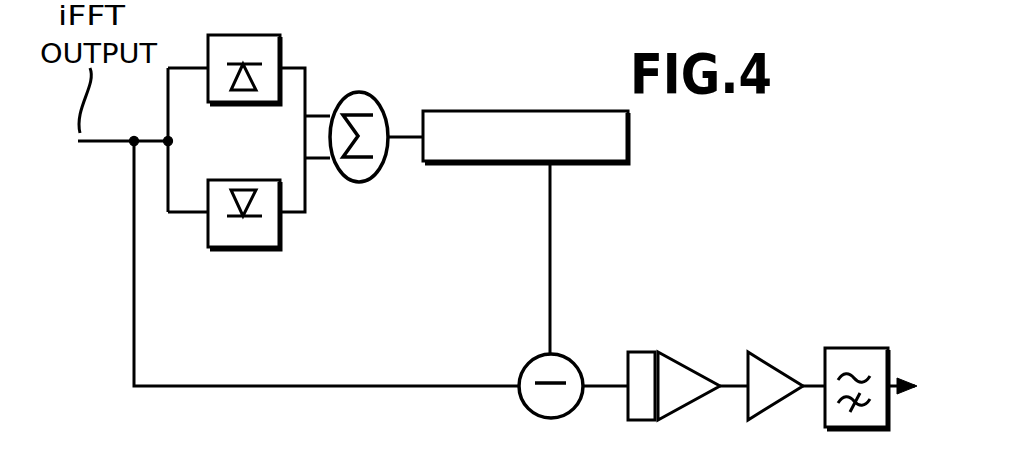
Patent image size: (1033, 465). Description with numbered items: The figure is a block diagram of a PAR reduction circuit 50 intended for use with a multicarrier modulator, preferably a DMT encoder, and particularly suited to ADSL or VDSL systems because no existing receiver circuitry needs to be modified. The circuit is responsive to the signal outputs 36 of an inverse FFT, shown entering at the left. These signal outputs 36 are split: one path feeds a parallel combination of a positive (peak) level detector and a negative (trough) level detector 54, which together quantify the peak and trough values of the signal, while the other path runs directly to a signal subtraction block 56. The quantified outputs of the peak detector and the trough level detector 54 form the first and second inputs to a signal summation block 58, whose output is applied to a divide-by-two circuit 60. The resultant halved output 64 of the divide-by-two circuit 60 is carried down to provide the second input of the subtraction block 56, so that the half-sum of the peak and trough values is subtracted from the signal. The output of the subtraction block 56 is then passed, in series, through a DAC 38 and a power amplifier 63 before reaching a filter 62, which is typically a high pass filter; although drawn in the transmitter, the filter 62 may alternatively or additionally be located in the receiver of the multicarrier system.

The signal outputs 36 is at (106, 144).
The PAR reduction circuit 50 is at (246, 446).
The trough level detector 54 is at (208, 243).
The signal summation block 58 is at (358, 172).
The divide-by-two circuit 60 is at (446, 110).
The halved output 64 is at (548, 199).
The signal subtraction block 56 is at (538, 398).
The DAC 38 is at (643, 420).
The power amplifier 63 is at (762, 390).
The filter 62 is at (831, 403).